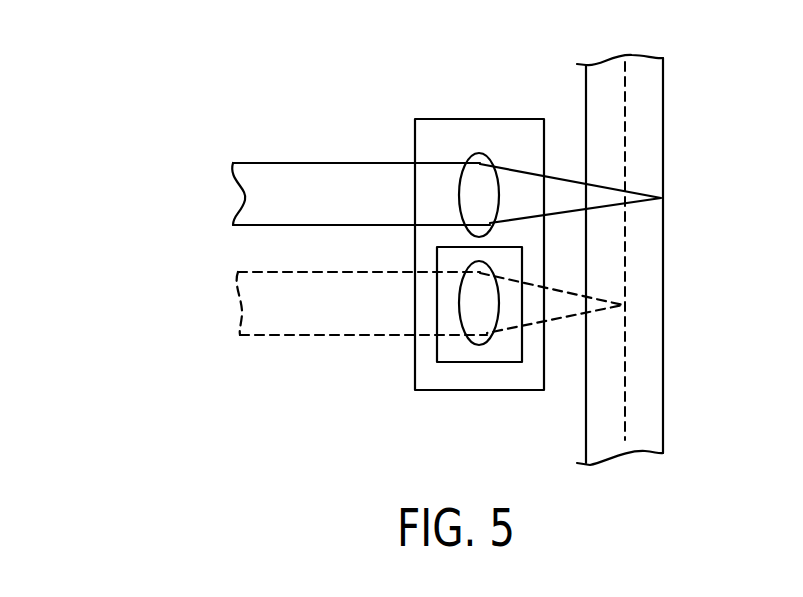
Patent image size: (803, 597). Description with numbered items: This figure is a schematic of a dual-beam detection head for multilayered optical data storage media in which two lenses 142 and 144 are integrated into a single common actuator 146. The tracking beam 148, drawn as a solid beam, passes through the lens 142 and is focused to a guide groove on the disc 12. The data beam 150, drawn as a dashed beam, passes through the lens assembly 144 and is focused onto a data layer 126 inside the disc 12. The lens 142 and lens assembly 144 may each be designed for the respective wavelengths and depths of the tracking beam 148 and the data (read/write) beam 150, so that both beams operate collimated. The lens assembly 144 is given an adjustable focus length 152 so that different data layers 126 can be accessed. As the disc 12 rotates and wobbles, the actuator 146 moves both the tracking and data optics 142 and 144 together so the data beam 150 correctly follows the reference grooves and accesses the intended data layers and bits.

The disc 12 is at (665, 135).
The data layer 126 is at (625, 362).
The lens 142 is at (468, 160).
The lens assembly 144 is at (470, 340).
The actuator 146 is at (486, 119).
The tracking beam 148 is at (278, 162).
The data beam 150 is at (285, 336).
The adjustable focus length 152 is at (455, 362).